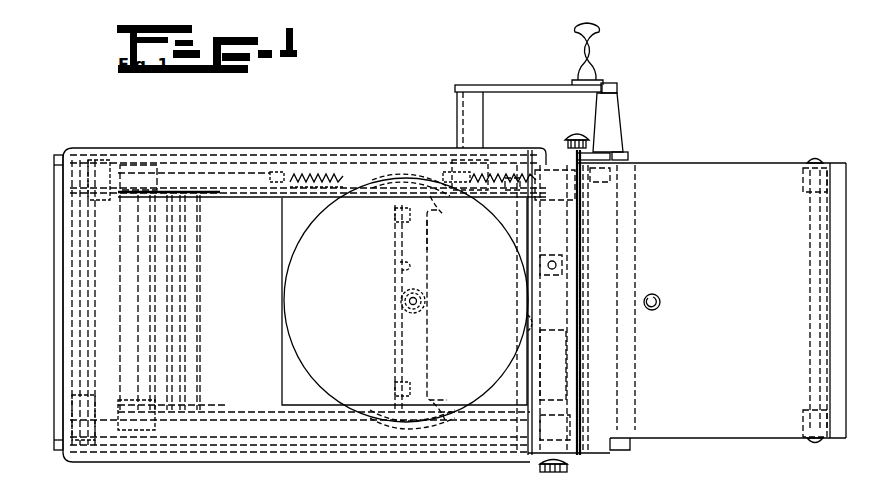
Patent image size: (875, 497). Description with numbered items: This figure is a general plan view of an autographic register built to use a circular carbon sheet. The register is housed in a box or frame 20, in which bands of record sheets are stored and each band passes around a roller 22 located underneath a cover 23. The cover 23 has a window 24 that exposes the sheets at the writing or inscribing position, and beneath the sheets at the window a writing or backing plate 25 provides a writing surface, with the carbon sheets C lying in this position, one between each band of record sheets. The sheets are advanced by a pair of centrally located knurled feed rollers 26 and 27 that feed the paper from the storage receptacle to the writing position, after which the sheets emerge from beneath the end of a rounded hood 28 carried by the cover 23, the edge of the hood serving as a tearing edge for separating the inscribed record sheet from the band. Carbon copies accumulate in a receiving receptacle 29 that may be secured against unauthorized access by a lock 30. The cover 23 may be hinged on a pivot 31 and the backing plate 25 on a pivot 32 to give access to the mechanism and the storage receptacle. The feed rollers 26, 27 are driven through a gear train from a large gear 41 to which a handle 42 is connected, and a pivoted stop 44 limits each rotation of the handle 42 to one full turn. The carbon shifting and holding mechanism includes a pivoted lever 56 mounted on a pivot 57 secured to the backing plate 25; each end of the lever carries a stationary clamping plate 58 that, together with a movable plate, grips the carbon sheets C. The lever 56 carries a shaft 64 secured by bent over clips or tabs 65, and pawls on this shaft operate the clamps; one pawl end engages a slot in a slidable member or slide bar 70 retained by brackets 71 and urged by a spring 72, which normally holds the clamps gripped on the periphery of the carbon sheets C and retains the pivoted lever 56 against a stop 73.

The box or frame 20 is at (190, 150).
The roller 22 is at (147, 292).
The cover 23 is at (238, 200).
The window 24 is at (278, 370).
The writing or backing plate 25 is at (310, 400).
The upper feed roller 26 is at (525, 322).
The lower feed roller 27 is at (530, 291).
The rounded hood 28 is at (572, 462).
The receiving receptacle 29 is at (750, 438).
The lock 30 is at (652, 310).
The pivot 31 is at (80, 450).
The pivot 32 is at (110, 440).
The large gear 41 is at (453, 173).
The handle 42 is at (513, 85).
The pivoted stop 44 is at (612, 88).
The pivoted lever 56 is at (430, 330).
The pivot 57 is at (422, 302).
The stationary clamping plate 58 is at (438, 196).
The shaft 64 is at (400, 266).
The bent over clips or tabs 65 is at (392, 218).
The slidable member or slide bar 70 is at (268, 172).
The brackets 71 is at (285, 183).
The spring 72 is at (311, 178).
The stop 73 is at (432, 228).
The carbon sheets C is at (318, 228).